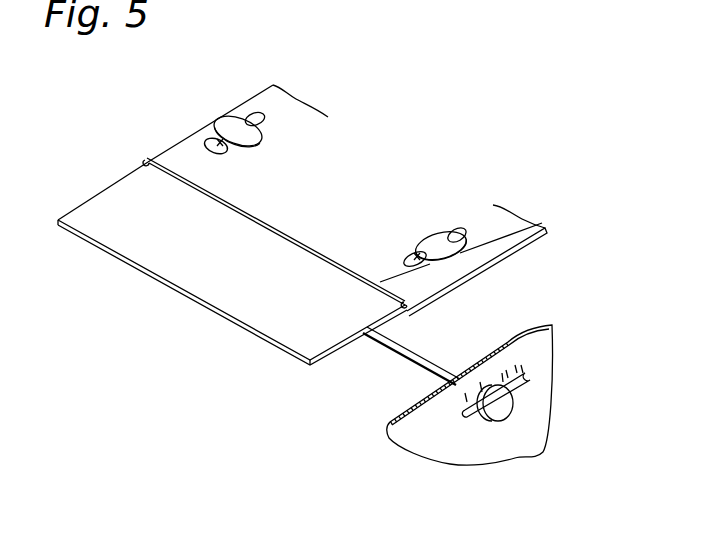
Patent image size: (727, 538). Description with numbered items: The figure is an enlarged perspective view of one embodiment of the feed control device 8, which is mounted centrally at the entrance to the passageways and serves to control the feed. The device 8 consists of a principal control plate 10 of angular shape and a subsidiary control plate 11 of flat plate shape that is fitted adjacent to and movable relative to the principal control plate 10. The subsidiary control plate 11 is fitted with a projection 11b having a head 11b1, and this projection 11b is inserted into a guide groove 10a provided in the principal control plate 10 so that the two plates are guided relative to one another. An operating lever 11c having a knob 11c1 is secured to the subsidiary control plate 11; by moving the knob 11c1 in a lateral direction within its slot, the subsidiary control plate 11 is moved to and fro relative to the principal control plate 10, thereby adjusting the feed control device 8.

The feed control device 8 is at (386, 171).
The principal control plate 10 is at (490, 248).
The guide groove 10a is at (262, 120).
The subsidiary control plate 11 is at (185, 267).
The projection 11b is at (410, 257).
The head 11b1 is at (433, 239).
The operating lever 11c is at (401, 355).
The knob 11c1 is at (503, 407).